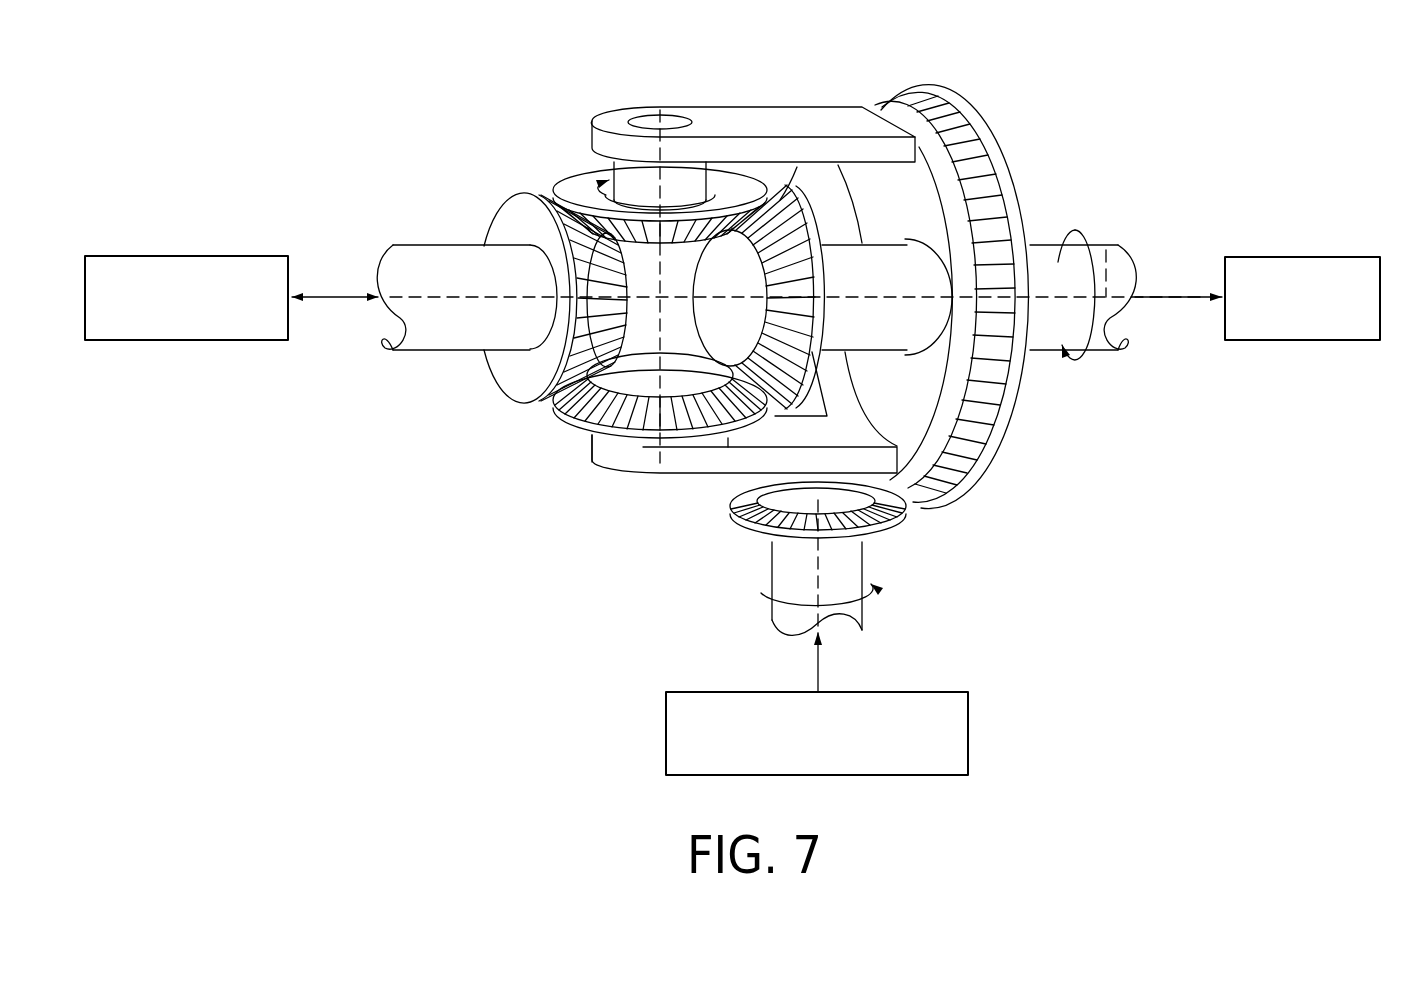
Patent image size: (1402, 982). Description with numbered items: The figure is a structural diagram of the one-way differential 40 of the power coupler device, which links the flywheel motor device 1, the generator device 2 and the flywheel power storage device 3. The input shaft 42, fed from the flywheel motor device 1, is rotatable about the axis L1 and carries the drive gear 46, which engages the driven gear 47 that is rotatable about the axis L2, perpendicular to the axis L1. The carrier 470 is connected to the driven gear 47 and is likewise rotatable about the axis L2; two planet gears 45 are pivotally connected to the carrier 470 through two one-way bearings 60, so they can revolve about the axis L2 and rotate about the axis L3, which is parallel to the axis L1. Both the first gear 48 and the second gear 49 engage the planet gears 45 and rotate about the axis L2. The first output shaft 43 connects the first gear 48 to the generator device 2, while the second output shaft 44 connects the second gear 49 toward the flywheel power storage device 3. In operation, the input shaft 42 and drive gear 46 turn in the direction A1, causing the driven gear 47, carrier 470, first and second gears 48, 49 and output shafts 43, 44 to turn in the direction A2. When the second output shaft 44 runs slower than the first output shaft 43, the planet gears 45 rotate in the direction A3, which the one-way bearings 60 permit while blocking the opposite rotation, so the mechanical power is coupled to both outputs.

The flywheel motor device 1 is at (968, 733).
The generator device 2 is at (1354, 258).
The flywheel power storage device 3 is at (262, 257).
The one-way differential 40 is at (1043, 93).
The input shaft 42 is at (780, 563).
The first output shaft 43 is at (1098, 340).
The second output shaft 44 is at (408, 268).
The planet gears 45 is at (585, 193).
The drive gear 46 is at (735, 517).
The driven gear 47 is at (990, 430).
The first gear 48 is at (805, 290).
The second gear 49 is at (597, 288).
The one-way bearings 60 is at (628, 177).
The carrier 470 is at (761, 120).
The rotation direction of input shaft and drive gear A1 is at (862, 586).
The rotation direction about axis L2 A2 is at (1071, 228).
The rotation direction of planet gears A3 is at (640, 203).
The axis of drive gear L1 is at (820, 568).
The axis of driven gear L2 is at (1106, 250).
The axis of planet gears L3 is at (662, 150).